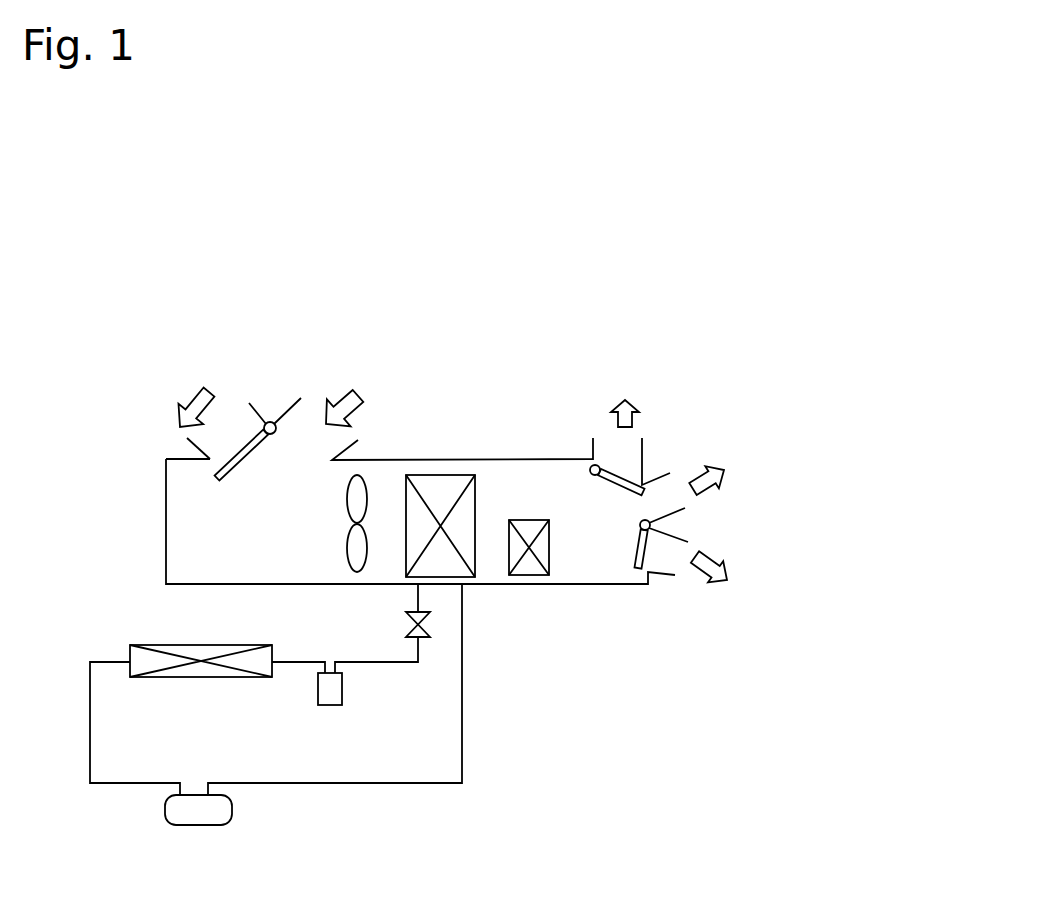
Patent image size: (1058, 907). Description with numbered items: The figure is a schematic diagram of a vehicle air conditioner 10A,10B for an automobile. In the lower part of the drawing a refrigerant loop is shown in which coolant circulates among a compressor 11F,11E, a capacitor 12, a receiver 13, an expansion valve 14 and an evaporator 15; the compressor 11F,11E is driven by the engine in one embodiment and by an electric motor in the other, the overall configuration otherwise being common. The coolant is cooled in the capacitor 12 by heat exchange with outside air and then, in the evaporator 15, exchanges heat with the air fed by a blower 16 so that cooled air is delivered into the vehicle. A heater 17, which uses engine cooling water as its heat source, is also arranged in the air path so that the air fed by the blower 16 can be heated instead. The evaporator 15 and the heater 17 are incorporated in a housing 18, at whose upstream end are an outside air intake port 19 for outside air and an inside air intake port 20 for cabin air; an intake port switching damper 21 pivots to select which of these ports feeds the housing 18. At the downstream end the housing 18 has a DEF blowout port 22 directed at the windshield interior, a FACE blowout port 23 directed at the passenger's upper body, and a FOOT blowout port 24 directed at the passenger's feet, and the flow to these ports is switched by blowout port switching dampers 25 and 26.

The vehicle air conditioner 10A,10B is at (636, 348).
The compressor 11F,11E is at (232, 815).
The capacitor 12 is at (207, 680).
The receiver 13 is at (343, 700).
The expansion valve 14 is at (429, 633).
The evaporator 15 is at (437, 483).
The blower 16 is at (353, 551).
The heater 17 is at (549, 572).
The housing 18 is at (166, 568).
The outside air intake port 19 is at (320, 408).
The inside air intake port 20 is at (237, 408).
The intake port switching damper 21 is at (257, 462).
The DEF blowout port 22 is at (633, 443).
The FACE blowout port 23 is at (692, 500).
The FOOT blowout port 24 is at (692, 547).
The blowout port switching damper 25 is at (617, 492).
The blowout port switching damper 26 is at (638, 530).